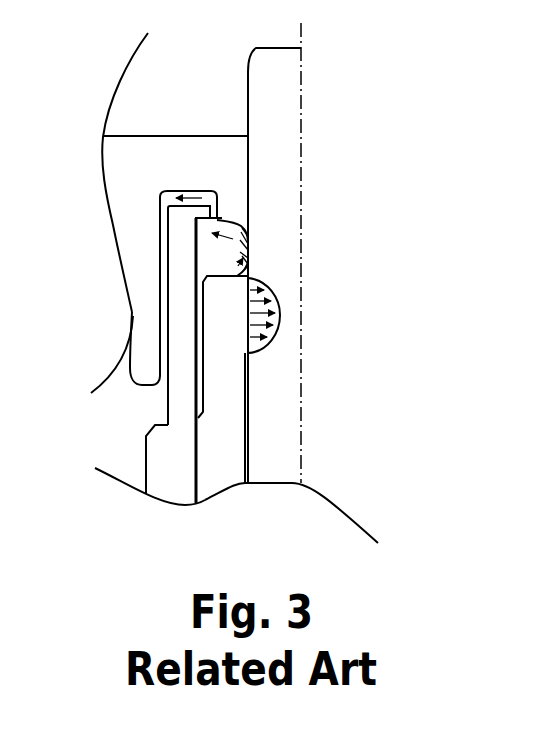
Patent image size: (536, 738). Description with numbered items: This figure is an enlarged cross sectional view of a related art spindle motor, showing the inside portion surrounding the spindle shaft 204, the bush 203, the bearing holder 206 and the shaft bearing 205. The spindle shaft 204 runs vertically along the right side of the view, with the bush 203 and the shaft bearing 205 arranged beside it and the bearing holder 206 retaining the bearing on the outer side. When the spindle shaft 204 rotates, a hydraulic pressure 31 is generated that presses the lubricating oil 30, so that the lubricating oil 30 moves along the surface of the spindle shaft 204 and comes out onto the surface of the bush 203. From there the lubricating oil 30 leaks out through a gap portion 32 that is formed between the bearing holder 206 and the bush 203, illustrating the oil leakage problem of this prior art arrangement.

The bush 203 is at (197, 146).
The spindle shaft 204 is at (288, 147).
The shaft bearing 205 is at (227, 489).
The bearing holder 206 is at (167, 496).
The lubricating oil 30 is at (251, 233).
The hydraulic pressure 31 is at (279, 306).
The gap portion 32 is at (166, 291).